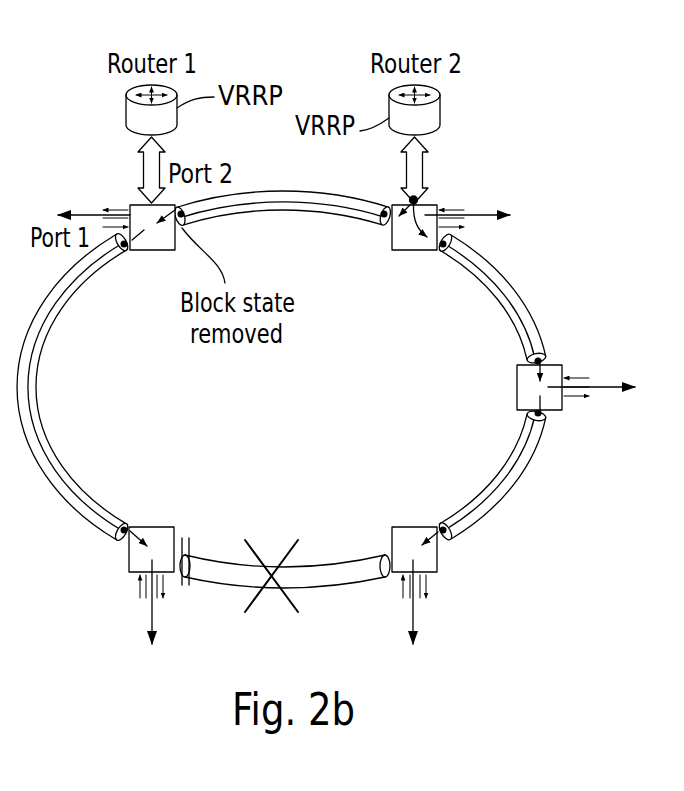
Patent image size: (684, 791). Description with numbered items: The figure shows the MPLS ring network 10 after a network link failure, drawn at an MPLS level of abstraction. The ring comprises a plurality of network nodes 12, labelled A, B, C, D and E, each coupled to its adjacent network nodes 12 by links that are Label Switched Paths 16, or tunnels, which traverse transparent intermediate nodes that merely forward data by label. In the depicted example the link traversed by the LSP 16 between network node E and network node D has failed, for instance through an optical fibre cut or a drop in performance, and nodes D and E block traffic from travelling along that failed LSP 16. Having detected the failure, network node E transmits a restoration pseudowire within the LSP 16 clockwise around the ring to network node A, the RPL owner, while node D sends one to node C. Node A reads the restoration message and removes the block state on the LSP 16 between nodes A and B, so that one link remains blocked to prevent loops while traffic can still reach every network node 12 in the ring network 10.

The MPLS ring network 10 is at (556, 575).
The network node 12 is at (135, 203).
The Label Switched Path 16 is at (317, 212).